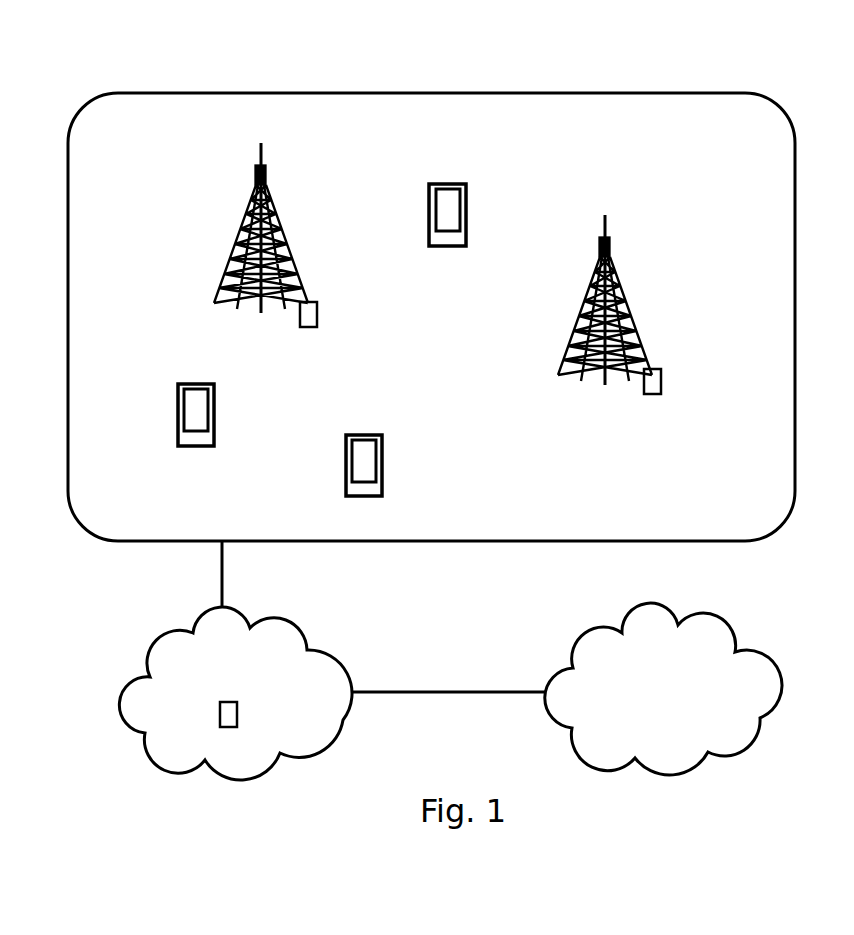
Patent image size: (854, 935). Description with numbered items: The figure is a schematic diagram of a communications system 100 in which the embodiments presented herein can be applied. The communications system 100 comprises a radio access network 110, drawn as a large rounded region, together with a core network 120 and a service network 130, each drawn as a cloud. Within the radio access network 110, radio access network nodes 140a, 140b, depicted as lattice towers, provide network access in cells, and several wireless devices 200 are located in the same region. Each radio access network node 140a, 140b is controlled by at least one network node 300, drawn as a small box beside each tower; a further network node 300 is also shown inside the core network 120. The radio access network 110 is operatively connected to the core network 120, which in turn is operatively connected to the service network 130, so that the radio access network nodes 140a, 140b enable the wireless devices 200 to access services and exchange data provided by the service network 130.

The communications system 100 is at (140, 50).
The radio access network 110 is at (760, 136).
The core network 120 is at (213, 683).
The service network 130 is at (688, 705).
The radio access network node 140a is at (259, 156).
The radio access network node 140b is at (607, 230).
The wireless device 200 is at (467, 215).
The network node 300 is at (318, 312).